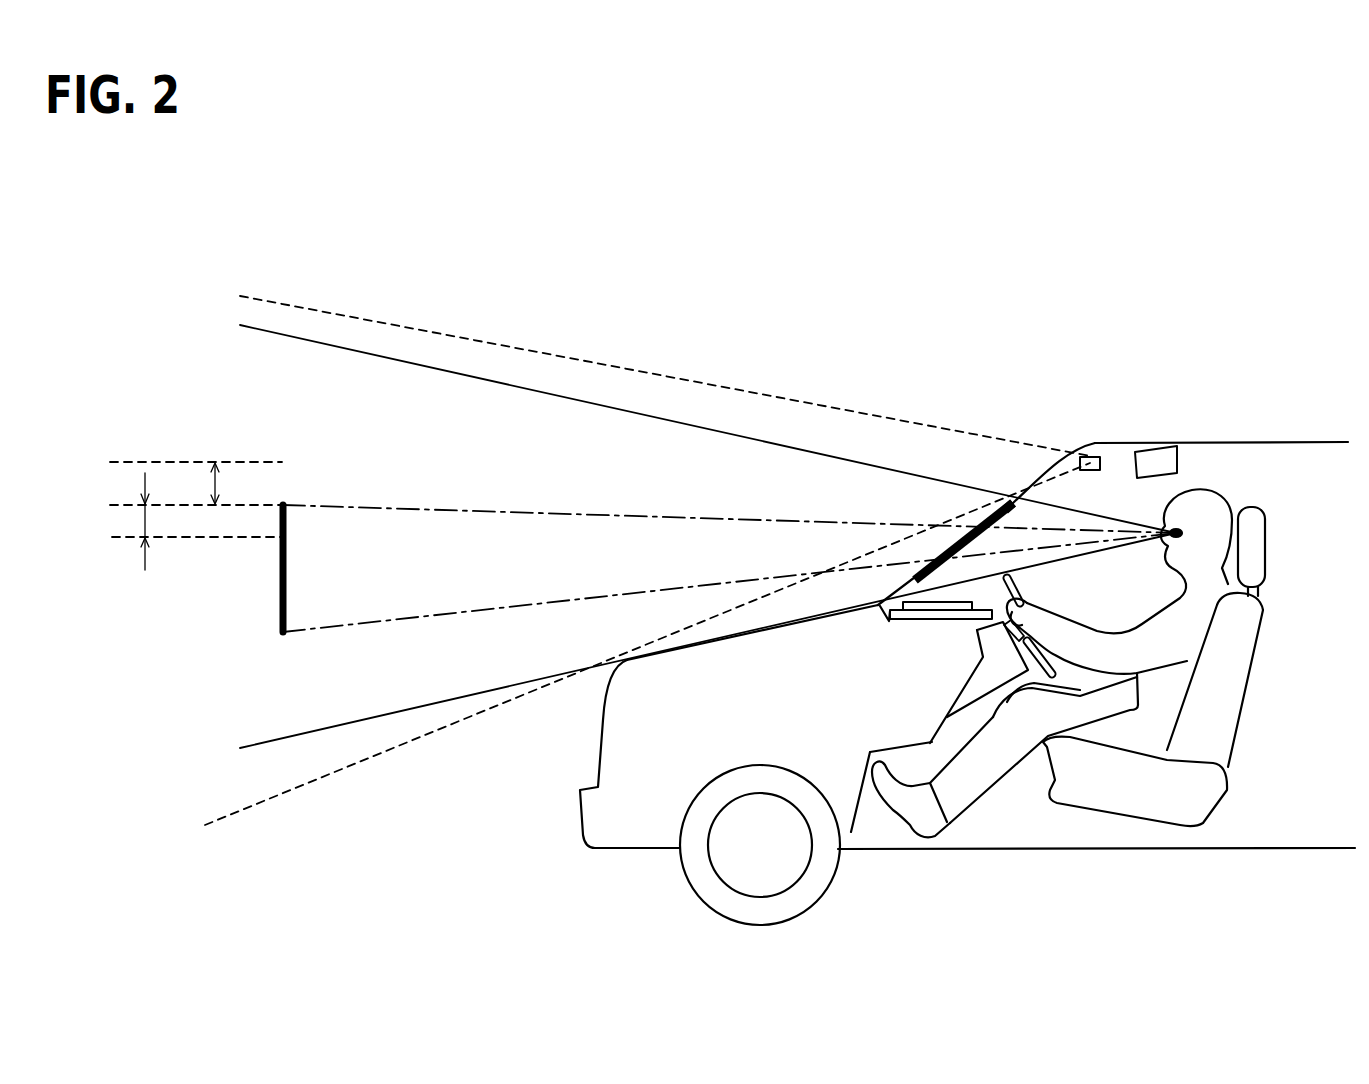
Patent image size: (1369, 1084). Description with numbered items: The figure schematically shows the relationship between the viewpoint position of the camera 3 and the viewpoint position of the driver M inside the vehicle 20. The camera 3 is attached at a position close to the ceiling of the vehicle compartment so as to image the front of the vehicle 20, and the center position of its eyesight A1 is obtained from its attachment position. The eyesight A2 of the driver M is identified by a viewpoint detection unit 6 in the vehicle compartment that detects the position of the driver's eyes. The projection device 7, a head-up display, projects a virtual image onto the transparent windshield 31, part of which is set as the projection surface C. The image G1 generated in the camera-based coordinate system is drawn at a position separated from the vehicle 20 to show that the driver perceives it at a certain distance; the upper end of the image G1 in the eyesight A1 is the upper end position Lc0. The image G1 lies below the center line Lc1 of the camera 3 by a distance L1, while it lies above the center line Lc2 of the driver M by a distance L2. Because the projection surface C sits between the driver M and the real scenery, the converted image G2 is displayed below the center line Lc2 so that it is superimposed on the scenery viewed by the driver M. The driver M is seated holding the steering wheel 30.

The camera 3 is at (1152, 456).
The viewpoint detection unit 6 is at (1068, 460).
The projection device 7 is at (943, 600).
The vehicle 20 is at (1268, 442).
The steering wheel 30 is at (1023, 588).
The windshield 31 is at (1050, 470).
The driver M is at (1228, 500).
The projection surface C is at (1005, 512).
The image G1 is at (288, 572).
The converted image G2 is at (982, 536).
The eyesight of the camera A1 is at (670, 377).
The eyesight of the driver A2 is at (723, 433).
The upper end position Lc0 is at (618, 512).
The center line of the camera Lc1 is at (171, 465).
The center line of the driver Lc2 is at (171, 540).
The distance L1 is at (237, 483).
The distance L2 is at (144, 536).